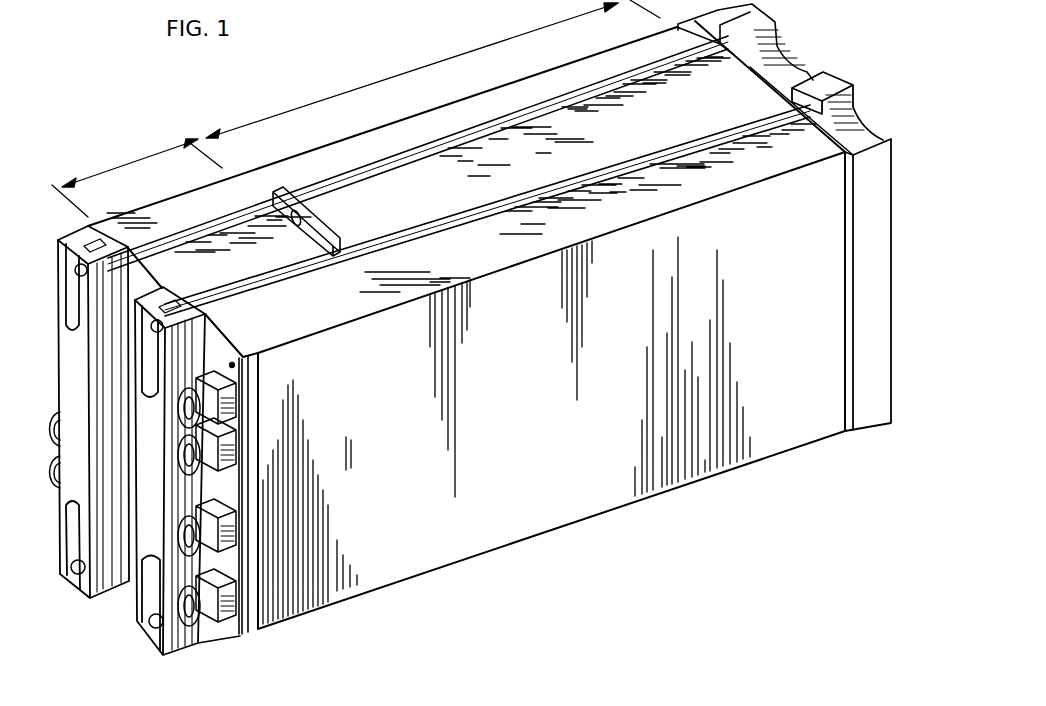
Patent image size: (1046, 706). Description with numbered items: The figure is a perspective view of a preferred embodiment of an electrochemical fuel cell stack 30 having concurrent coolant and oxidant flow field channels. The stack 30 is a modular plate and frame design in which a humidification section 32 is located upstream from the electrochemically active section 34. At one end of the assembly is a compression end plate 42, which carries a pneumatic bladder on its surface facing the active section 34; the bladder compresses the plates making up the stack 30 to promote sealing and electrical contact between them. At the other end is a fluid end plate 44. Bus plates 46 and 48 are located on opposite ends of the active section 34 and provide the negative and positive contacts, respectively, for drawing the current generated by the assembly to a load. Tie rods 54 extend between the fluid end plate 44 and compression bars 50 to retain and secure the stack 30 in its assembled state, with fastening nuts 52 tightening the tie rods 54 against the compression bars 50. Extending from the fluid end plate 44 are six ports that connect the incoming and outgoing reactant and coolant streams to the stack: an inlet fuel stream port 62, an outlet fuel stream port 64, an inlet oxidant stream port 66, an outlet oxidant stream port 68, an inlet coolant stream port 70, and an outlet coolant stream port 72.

The electrochemical fuel cell stack 30 is at (152, 118).
The humidification section 32 is at (130, 166).
The electrochemically active section 34 is at (397, 75).
The compression end plate 42 is at (877, 163).
The fluid end plate 44 is at (207, 522).
The bus plate 46 is at (313, 235).
The bus plate 48 is at (790, 62).
The compression bars 50 is at (140, 400).
The fastening nuts 52 is at (154, 328).
The tie rods 54 is at (503, 210).
The inlet fuel stream port 62 is at (57, 420).
The outlet fuel stream port 64 is at (50, 477).
The inlet oxidant stream port 66 is at (268, 628).
The outlet oxidant stream port 68 is at (182, 630).
The inlet coolant stream port 70 is at (227, 412).
The outlet coolant stream port 72 is at (187, 483).